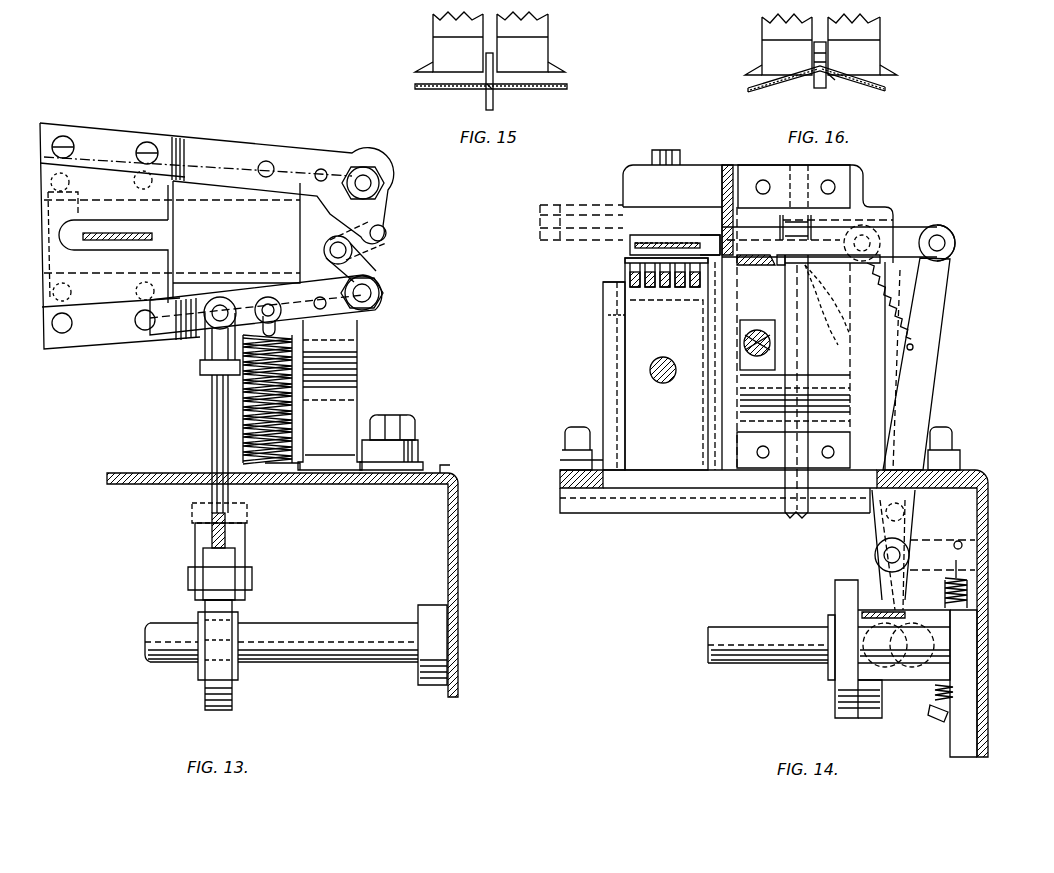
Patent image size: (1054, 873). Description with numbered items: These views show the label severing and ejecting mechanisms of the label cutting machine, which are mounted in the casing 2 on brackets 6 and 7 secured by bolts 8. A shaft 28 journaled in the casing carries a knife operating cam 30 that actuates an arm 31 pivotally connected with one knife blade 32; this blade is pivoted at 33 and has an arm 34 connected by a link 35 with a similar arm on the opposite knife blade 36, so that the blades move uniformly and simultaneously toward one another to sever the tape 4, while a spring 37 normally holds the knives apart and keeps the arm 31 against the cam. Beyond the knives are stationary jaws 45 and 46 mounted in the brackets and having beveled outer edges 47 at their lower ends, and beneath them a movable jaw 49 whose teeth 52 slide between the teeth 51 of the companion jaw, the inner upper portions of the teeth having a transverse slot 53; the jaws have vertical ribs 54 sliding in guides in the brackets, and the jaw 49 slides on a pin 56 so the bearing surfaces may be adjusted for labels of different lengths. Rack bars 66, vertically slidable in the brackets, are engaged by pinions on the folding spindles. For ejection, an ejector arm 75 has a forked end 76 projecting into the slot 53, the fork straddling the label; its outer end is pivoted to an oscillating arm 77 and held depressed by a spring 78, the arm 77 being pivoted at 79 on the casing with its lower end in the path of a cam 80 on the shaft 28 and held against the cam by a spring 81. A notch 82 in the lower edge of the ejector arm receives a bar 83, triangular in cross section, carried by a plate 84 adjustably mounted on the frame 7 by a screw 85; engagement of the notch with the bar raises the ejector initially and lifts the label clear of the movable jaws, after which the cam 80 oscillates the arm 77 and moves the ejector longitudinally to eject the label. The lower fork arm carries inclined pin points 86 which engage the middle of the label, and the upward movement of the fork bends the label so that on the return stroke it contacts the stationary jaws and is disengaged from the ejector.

In FIG. 13, the casing 2 is at (312, 484).
In FIG. 14, the casing 2 is at (615, 505).
In FIG. 13, the tape 4 is at (155, 238).
In FIG. 14, the tape 4 is at (640, 245).
In FIG. 15, the tape 4 is at (567, 86).
In FIG. 16, the tape 4 is at (772, 83).
In FIG. 13, the bracket 6 is at (358, 374).
In FIG. 15, the bracket 6 is at (548, 22).
In FIG. 16, the bracket 6 is at (880, 27).
In FIG. 14, the bracket 7 is at (603, 341).
In FIG. 15, the bracket 7 is at (433, 22).
In FIG. 16, the bracket 7 is at (762, 27).
In FIG. 13, the bolts 8 is at (395, 416).
In FIG. 14, the bolts 8 is at (577, 430).
In FIG. 13, the shaft 28 is at (146, 650).
In FIG. 14, the shaft 28 is at (795, 664).
In FIG. 13, the knife operating cam 30 is at (205, 690).
In FIG. 13, the arm 31 is at (212, 446).
In FIG. 13, the knife blade 32 is at (200, 330).
In FIG. 13, the pivot 33 is at (372, 296).
In FIG. 13, the arm 34 is at (368, 266).
In FIG. 13, the link 35 is at (362, 248).
In FIG. 13, the knife blade 36 is at (235, 148).
In FIG. 13, the spring 37 is at (245, 419).
In FIG. 15, the stationary jaw 45 is at (548, 48).
In FIG. 16, the stationary jaw 45 is at (880, 50).
In FIG. 14, the stationary jaw 46 is at (628, 218).
In FIG. 15, the stationary jaw 46 is at (433, 48).
In FIG. 16, the stationary jaw 46 is at (762, 48).
In FIG. 15, the beveled outer edges 47 is at (420, 72).
In FIG. 16, the beveled outer edges 47 is at (746, 75).
In FIG. 14, the movable jaw 49 is at (673, 362).
In FIG. 14, the teeth 51 is at (665, 288).
In FIG. 14, the teeth 52 is at (627, 268).
In FIG. 14, the transverse slot 53 is at (640, 275).
In FIG. 14, the vertical ribs 54 is at (608, 316).
In FIG. 14, the pin 56 is at (662, 383).
In FIG. 14, the rack bars 66 is at (808, 372).
In FIG. 14, the ejector arm 75 is at (905, 232).
In FIG. 14, the forked end 76 is at (637, 252).
In FIG. 15, the forked end 76 is at (493, 97).
In FIG. 16, the forked end 76 is at (814, 80).
In FIG. 14, the oscillating arm 77 is at (935, 313).
In FIG. 14, the spring 78 is at (880, 298).
In FIG. 14, the pivot 79 is at (874, 553).
In FIG. 14, the cam 80 is at (835, 700).
In FIG. 14, the spring 81 is at (968, 593).
In FIG. 14, the notch 82 is at (770, 262).
In FIG. 14, the bar 83 is at (758, 265).
In FIG. 14, the plate 84 is at (745, 312).
In FIG. 14, the screw 85 is at (770, 343).
In FIG. 14, the pin points 86 is at (700, 245).
In FIG. 15, the pin points 86 is at (486, 90).
In FIG. 16, the pin points 86 is at (833, 78).